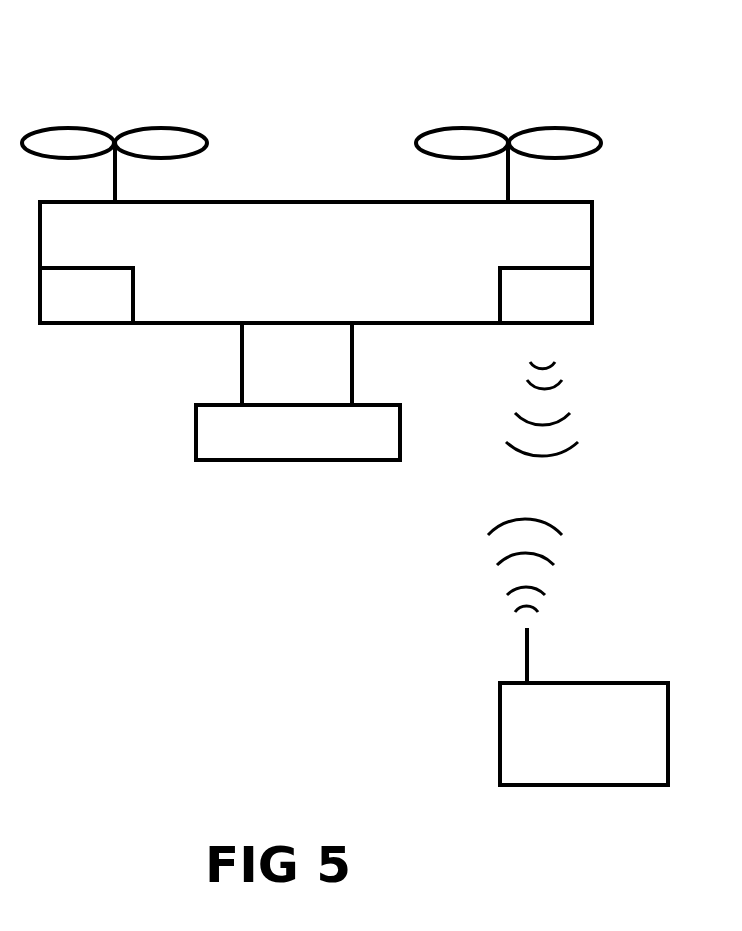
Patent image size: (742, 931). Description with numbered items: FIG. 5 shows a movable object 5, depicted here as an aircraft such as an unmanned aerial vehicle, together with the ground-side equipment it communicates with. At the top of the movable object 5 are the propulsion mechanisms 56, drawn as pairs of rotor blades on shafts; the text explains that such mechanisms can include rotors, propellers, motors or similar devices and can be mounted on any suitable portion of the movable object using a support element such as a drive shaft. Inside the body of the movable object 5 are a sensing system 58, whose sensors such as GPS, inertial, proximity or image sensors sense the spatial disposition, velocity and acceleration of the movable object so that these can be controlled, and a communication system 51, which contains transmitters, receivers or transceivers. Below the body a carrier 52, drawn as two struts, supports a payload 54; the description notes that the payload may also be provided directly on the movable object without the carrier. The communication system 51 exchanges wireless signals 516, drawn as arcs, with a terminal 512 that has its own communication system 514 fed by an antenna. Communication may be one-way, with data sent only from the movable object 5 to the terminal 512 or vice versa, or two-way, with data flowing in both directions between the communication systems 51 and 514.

The movable object 5 is at (622, 66).
The propulsion mechanisms 56 is at (146, 108).
The sensing system 58 is at (108, 305).
The communication system 51 is at (568, 305).
The carrier 52 is at (200, 354).
The payload 54 is at (324, 442).
The wireless signals 516 is at (613, 420).
The communication system 514 is at (526, 652).
The terminal 512 is at (602, 757).